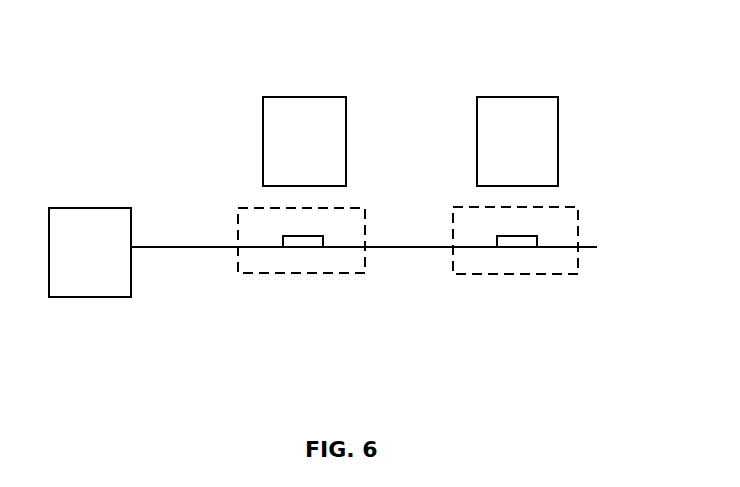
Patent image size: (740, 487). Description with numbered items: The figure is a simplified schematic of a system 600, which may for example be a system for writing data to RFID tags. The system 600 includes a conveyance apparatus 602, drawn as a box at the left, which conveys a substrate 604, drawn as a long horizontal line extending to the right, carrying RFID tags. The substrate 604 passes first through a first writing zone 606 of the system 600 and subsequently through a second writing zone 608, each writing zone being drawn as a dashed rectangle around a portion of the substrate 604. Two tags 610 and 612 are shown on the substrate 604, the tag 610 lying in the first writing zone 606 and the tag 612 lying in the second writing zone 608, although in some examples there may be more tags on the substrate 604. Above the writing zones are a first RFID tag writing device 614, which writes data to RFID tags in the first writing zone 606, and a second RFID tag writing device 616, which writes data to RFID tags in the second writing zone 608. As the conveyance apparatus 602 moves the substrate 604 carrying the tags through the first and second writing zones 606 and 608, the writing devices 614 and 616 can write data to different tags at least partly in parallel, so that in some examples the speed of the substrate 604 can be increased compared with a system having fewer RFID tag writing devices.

The system 600 is at (356, 397).
The conveyance apparatus 602 is at (131, 285).
The substrate 604 is at (173, 247).
The first writing zone 606 is at (365, 267).
The second writing zone 608 is at (578, 264).
The tag 610 is at (308, 247).
The tag 612 is at (537, 241).
The first RFID tag writing device 614 is at (307, 97).
The second RFID tag writing device 616 is at (517, 97).